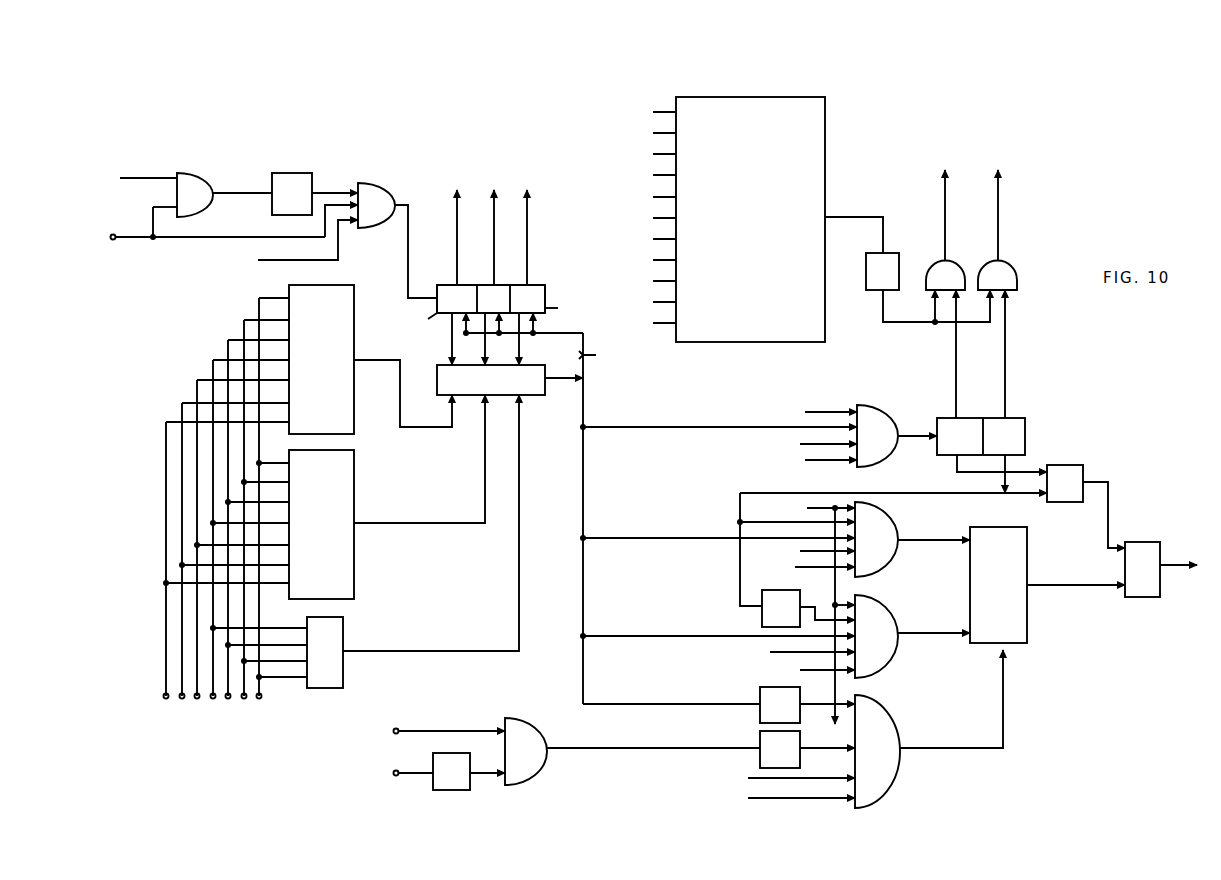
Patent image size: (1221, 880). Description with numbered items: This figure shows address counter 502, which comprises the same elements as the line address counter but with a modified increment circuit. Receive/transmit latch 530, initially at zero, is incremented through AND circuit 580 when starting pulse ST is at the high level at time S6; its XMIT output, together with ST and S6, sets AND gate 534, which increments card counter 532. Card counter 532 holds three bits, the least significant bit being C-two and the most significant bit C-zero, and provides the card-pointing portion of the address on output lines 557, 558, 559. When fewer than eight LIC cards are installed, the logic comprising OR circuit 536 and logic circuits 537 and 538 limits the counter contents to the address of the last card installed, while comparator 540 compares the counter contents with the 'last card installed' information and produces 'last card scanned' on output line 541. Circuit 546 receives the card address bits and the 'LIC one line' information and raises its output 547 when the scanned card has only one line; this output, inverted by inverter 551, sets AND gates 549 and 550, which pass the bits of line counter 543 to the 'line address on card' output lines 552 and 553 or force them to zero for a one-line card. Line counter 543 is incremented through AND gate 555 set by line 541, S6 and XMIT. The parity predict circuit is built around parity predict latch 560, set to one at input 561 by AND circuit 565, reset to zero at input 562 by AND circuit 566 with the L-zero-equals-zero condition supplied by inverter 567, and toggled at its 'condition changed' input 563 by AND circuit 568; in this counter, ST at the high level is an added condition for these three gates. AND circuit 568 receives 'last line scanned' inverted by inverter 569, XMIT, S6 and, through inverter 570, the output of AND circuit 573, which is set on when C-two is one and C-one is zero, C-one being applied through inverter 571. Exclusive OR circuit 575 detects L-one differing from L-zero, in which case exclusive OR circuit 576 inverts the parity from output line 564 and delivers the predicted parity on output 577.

The address counter 502 is at (420, 114).
The AND circuit 580 is at (207, 172).
The receive/transmit latch 530 is at (282, 172).
The AND gate 534 is at (385, 185).
The output line 557 is at (457, 243).
The output line 558 is at (494, 243).
The output line 559 is at (527, 237).
The card counter 532 is at (545, 292).
The comparator 540 is at (540, 368).
The output line 541 is at (568, 385).
The logic circuit 538 is at (354, 296).
The logic circuit 537 is at (356, 472).
The OR circuit 536 is at (343, 682).
The circuit 546 is at (826, 118).
The output 547 is at (860, 217).
The inverter 551 is at (899, 262).
The AND gate 549 is at (954, 266).
The AND gate 550 is at (1007, 266).
The output line 552 is at (944, 185).
The output line 553 is at (998, 196).
The AND gate 555 is at (883, 410).
The line counter 543 is at (1025, 426).
The exclusive OR circuit 575 is at (1065, 465).
The exclusive OR circuit 576 is at (1140, 542).
The output 577 is at (1170, 565).
The parity predict latch 560 is at (1030, 548).
The output line 564 is at (1088, 585).
The AND circuit 565 is at (896, 521).
The input 561 is at (932, 548).
The inverter 567 is at (760, 612).
The AND circuit 566 is at (896, 609).
The input RAZ 562 is at (934, 634).
The AND circuit 568 is at (897, 726).
The input 'Condition changed' 563 is at (1003, 722).
The inverter 569 is at (760, 692).
The inverter 570 is at (760, 738).
The AND circuit 573 is at (538, 782).
The inverter 571 is at (433, 790).